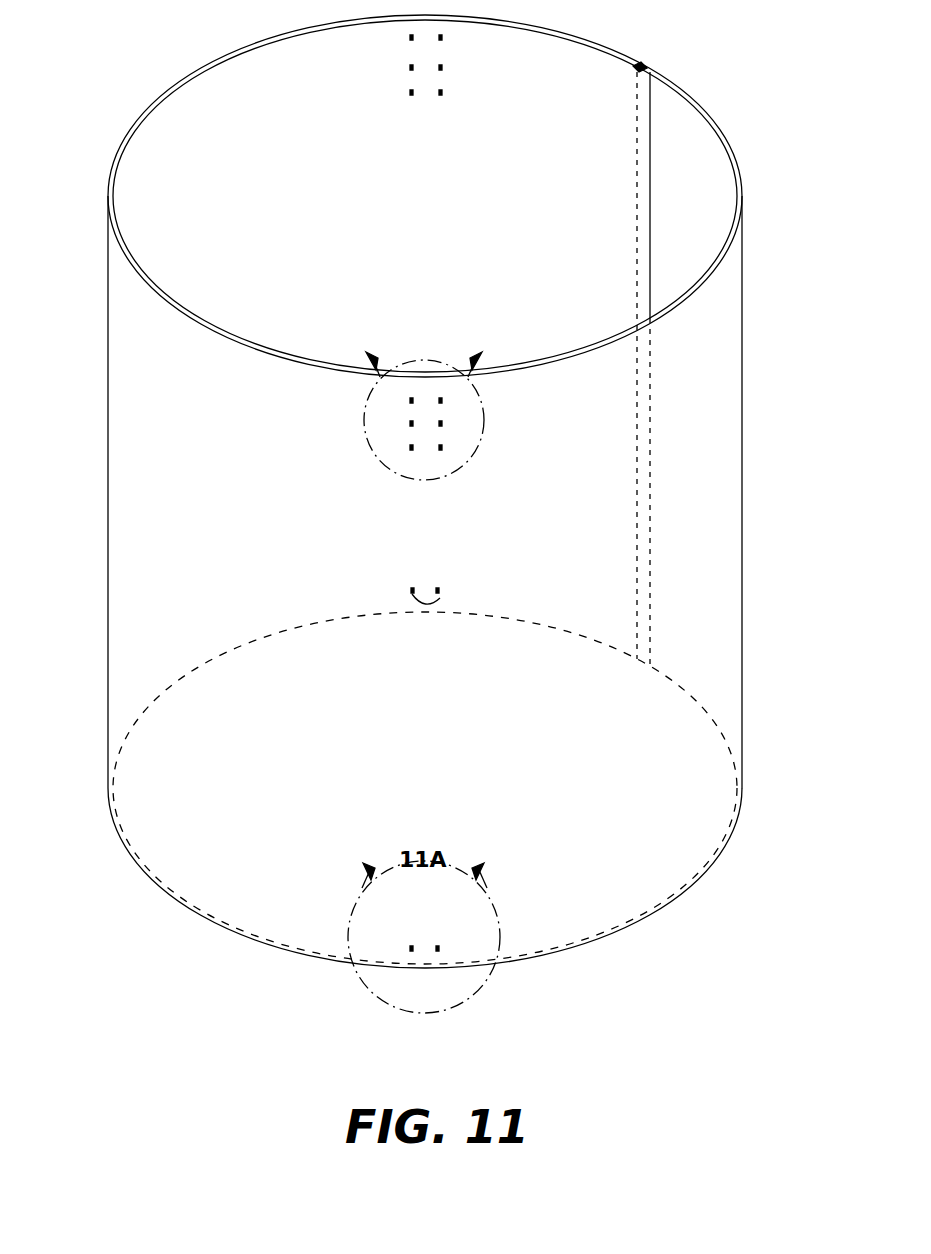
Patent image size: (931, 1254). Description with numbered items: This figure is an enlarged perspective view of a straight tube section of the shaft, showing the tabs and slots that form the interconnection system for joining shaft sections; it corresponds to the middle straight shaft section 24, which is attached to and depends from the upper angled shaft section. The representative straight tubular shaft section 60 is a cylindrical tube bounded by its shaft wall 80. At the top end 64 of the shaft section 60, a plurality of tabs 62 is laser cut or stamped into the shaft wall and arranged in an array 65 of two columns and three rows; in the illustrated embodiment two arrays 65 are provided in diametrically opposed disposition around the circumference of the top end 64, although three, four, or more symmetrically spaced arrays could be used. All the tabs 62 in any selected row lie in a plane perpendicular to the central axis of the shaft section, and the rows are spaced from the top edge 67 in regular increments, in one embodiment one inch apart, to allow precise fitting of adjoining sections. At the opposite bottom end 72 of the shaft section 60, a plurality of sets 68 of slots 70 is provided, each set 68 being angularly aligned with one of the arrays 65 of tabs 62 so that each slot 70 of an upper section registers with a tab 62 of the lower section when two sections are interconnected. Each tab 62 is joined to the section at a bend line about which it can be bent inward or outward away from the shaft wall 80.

The middle straight shaft section 24 is at (742, 487).
The straight tubular shaft section 60 is at (108, 463).
The tabs 62 is at (444, 447).
The top end 64 is at (128, 312).
The array 65 is at (398, 30).
The top edge 67 is at (135, 120).
The sets of slots 68 is at (423, 573).
The slots 70 is at (438, 596).
The bottom end 72 is at (128, 712).
The shaft wall 80 is at (308, 528).